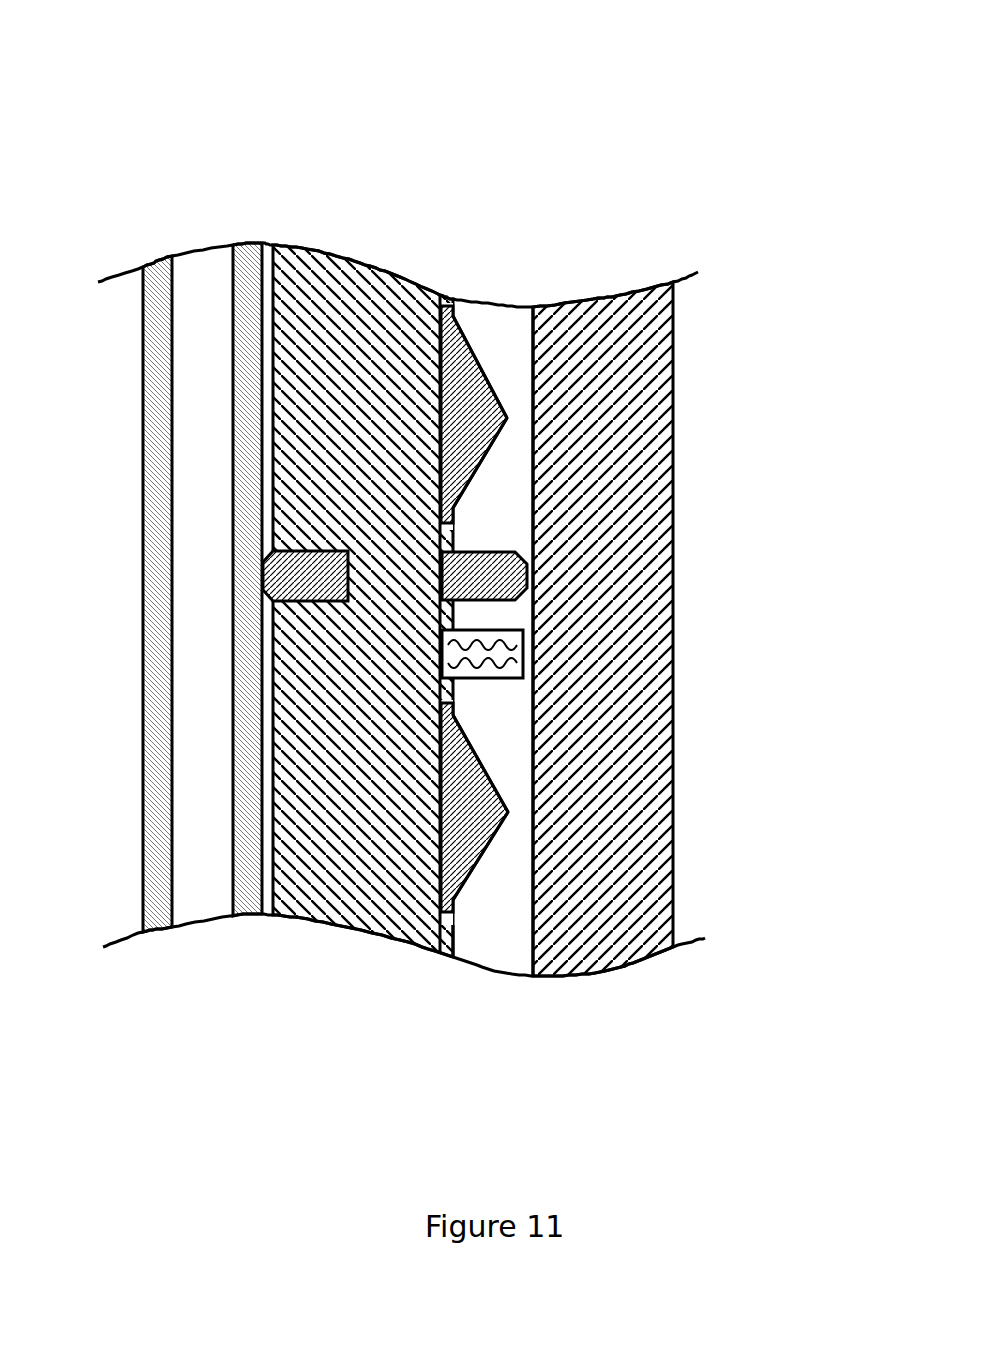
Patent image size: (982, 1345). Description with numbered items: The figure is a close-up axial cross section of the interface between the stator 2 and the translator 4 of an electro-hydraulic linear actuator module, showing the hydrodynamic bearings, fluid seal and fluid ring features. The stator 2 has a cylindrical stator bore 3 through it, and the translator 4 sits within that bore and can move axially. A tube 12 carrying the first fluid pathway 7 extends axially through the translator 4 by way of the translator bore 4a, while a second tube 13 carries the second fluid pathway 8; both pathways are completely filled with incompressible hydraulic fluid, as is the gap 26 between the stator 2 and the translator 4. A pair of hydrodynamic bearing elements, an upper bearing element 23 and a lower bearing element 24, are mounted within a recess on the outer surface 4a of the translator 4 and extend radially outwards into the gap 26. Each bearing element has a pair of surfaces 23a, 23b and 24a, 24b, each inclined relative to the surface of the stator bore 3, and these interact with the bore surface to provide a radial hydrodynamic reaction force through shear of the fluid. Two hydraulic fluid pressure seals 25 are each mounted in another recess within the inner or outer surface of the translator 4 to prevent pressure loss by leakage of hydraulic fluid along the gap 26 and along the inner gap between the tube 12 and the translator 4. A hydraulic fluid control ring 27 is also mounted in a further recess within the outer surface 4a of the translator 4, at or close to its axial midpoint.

The stator 2 is at (615, 600).
The stator bore 3 is at (528, 930).
The translator 4 is at (383, 298).
The translator bore / outer surface of the translator 4a is at (458, 940).
The first fluid pathway 7 is at (212, 295).
The second fluid pathway 8 is at (123, 295).
The tube 12 is at (250, 860).
The tube 13 is at (158, 908).
The upper hydrodynamic bearing element 23 is at (475, 422).
The surface of bearing element 23a is at (477, 362).
The surface of bearing element 23b is at (477, 472).
The lower hydrodynamic bearing element 24 is at (470, 817).
The surface of bearing element 24a is at (480, 758).
The surface of bearing element 24b is at (470, 870).
The hydraulic fluid pressure seal 25 is at (310, 572).
The gap 26 is at (478, 318).
The hydraulic fluid control ring 27 is at (463, 652).